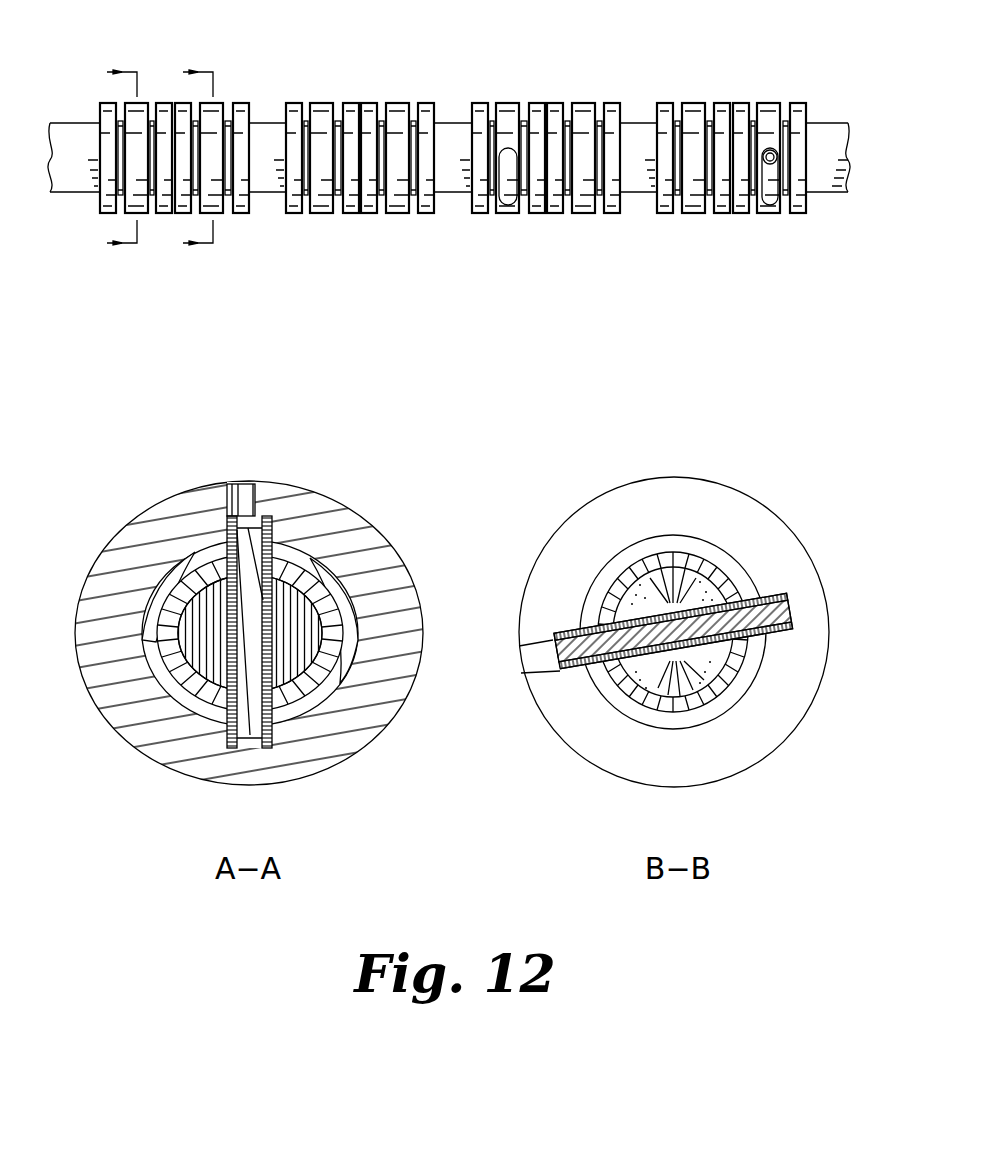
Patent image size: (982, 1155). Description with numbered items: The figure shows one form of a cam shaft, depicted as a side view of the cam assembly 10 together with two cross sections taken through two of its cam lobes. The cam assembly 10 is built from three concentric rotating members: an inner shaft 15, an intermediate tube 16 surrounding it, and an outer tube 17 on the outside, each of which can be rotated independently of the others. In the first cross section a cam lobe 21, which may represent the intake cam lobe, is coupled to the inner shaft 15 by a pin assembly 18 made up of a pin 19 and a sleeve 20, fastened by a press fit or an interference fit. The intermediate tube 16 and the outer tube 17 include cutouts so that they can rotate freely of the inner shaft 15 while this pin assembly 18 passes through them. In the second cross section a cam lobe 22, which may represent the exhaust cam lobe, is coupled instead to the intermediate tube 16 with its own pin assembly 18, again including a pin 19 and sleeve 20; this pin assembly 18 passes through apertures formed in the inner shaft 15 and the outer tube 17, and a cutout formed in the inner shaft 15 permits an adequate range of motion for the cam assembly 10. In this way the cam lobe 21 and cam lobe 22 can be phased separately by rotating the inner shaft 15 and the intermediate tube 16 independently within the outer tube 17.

The cam assembly 10 is at (467, 83).
The inner shaft 15 is at (207, 600).
The intermediate tube 16 is at (142, 615).
The outer tube 17 is at (155, 667).
The pin assembly 18 is at (228, 735).
The pin 19 is at (250, 705).
The sleeve 20 is at (270, 700).
The cam lobe 21 is at (142, 712).
The cam lobe 22 is at (790, 667).